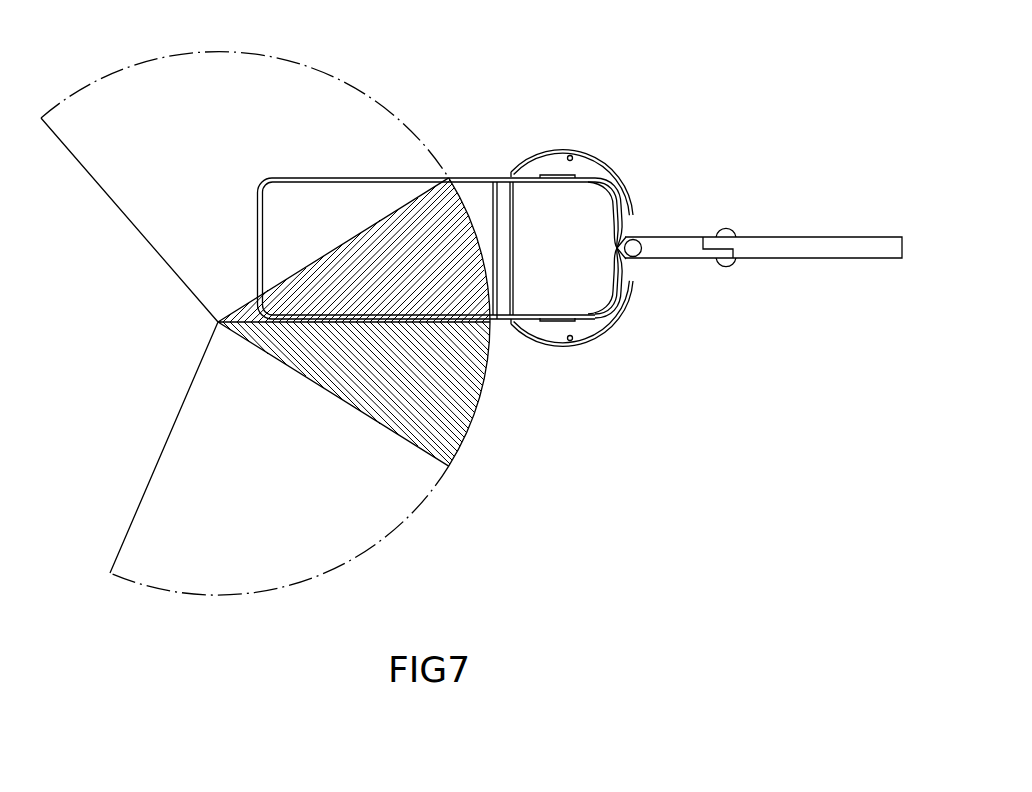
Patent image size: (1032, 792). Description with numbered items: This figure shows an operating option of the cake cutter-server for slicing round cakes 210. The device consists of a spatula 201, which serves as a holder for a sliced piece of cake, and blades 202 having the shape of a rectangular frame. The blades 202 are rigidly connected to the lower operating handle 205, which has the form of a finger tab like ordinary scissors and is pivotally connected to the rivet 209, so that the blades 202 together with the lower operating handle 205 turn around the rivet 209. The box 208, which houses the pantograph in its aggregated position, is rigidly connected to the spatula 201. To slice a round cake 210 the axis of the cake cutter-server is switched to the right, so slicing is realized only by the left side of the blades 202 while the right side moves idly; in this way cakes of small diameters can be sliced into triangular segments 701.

The spatula 201 is at (345, 202).
The blades 202 is at (607, 320).
The lower operating handle 205 is at (870, 216).
The box 208 is at (605, 162).
The rivet 209 is at (727, 232).
The round cake 210 is at (320, 480).
The triangular segments 701 is at (447, 272).